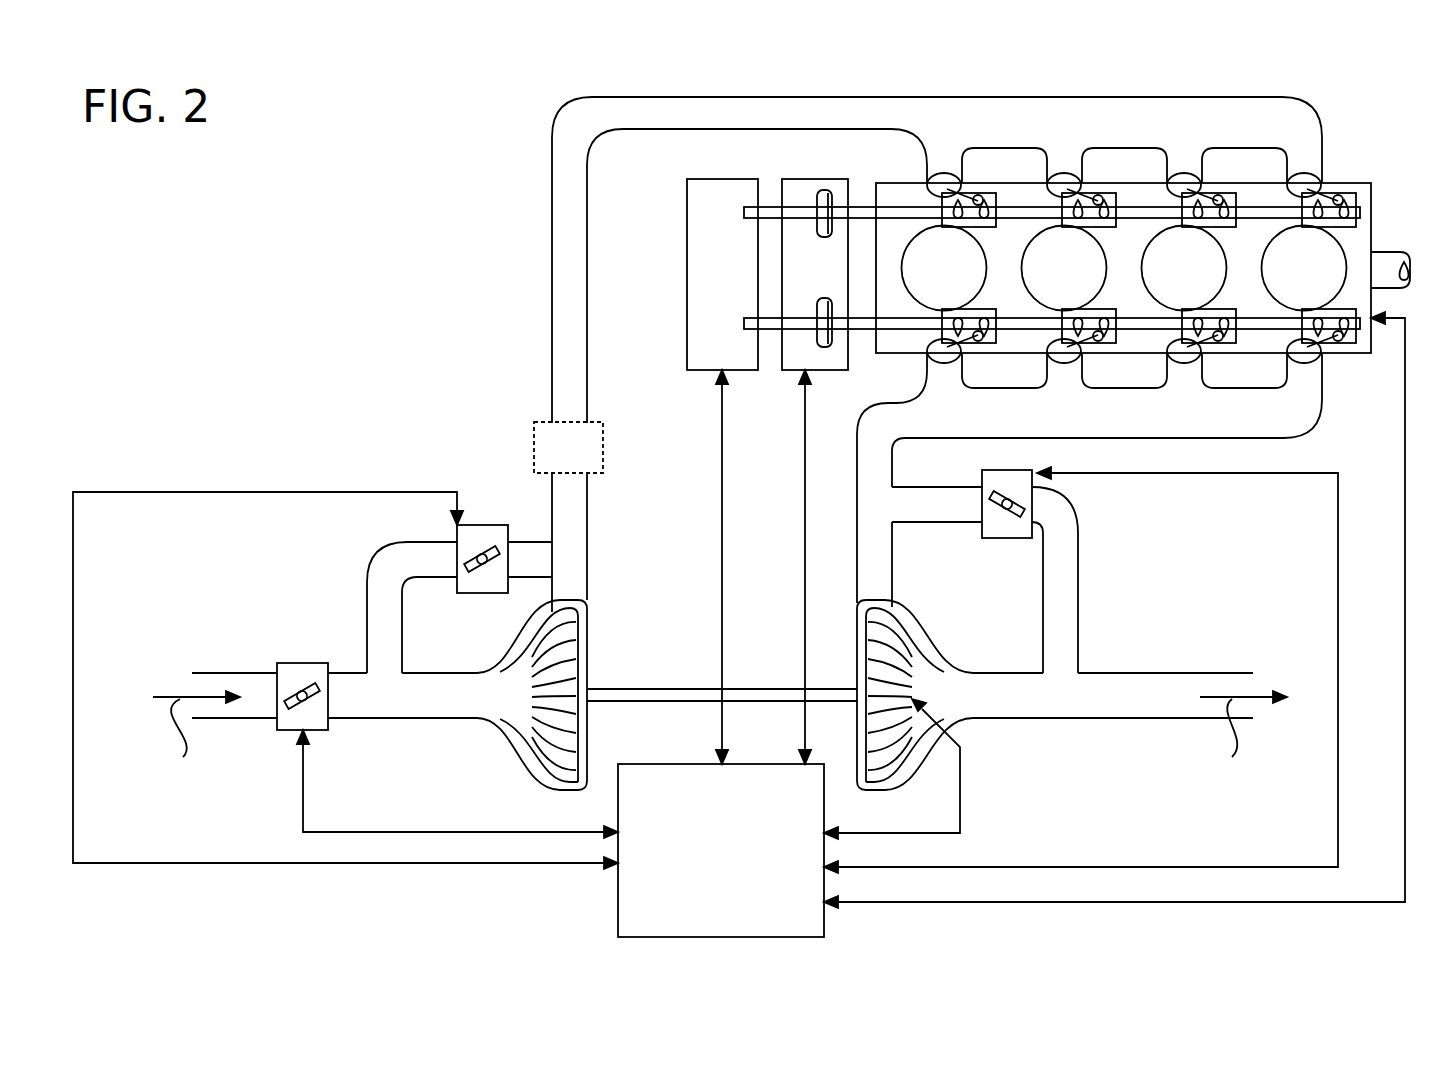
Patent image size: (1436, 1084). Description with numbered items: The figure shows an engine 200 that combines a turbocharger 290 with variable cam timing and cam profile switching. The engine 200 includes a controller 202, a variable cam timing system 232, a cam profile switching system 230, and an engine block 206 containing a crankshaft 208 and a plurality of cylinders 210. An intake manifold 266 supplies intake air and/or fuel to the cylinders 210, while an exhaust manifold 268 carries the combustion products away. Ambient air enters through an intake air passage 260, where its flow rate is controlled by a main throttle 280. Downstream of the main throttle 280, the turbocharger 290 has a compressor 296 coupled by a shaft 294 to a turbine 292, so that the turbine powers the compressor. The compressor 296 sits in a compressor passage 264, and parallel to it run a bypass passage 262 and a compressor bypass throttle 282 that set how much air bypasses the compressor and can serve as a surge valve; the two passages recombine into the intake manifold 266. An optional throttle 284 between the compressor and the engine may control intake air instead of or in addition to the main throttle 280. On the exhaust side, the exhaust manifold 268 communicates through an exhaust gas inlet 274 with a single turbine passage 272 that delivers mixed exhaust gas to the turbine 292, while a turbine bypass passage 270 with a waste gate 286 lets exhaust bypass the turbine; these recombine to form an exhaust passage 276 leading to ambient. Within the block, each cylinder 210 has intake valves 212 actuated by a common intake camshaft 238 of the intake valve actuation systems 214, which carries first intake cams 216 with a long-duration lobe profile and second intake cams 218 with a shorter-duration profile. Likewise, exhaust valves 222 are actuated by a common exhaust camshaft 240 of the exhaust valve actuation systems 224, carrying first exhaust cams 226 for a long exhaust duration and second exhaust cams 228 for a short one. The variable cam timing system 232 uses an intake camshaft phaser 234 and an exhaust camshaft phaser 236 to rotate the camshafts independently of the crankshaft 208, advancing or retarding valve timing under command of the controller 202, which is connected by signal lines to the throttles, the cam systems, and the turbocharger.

The engine 200 is at (333, 150).
The controller 202 is at (826, 918).
The engine block 206 is at (1380, 183).
The crankshaft 208 is at (1388, 252).
The cylinders 210 is at (1048, 281).
The intake valves 212 is at (1062, 173).
The intake valve actuation systems 214 is at (1113, 226).
The first intake cams 216 is at (1088, 195).
The second intake cams 218 is at (1104, 196).
The exhaust valves 222 is at (1052, 368).
The exhaust valve actuation systems 224 is at (1115, 312).
The first exhaust cams 226 is at (1093, 343).
The second exhaust cams 228 is at (1108, 345).
The cam profile switching system 230 is at (687, 220).
The variable cam timing system 232 is at (780, 362).
The intake camshaft phaser 234 is at (824, 188).
The exhaust camshaft phaser 236 is at (823, 348).
The intake camshaft 238 is at (888, 205).
The exhaust camshaft 240 is at (905, 330).
The intake air passage 260 is at (257, 687).
The bypass passage 262 is at (386, 580).
The compressor passage 264 is at (441, 707).
The intake manifold 266 is at (1184, 138).
The exhaust manifold 268 is at (1194, 425).
The turbine bypass passage 270 is at (917, 516).
The turbine passage 272 is at (878, 574).
The exhaust gas inlet 274 is at (877, 526).
The exhaust passage 276 is at (1096, 708).
The main throttle 280 is at (320, 662).
The compressor bypass throttle 282 is at (510, 530).
The throttle 284 is at (540, 420).
The waste gate 286 is at (1003, 538).
The turbocharger 290 is at (725, 708).
The turbine 292 is at (913, 763).
The shaft 294 is at (690, 687).
The compressor 296 is at (527, 745).